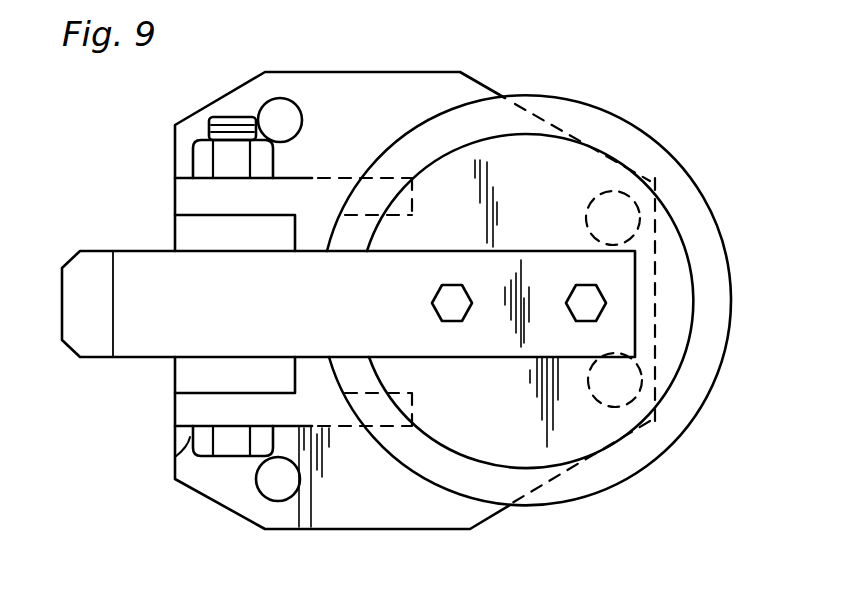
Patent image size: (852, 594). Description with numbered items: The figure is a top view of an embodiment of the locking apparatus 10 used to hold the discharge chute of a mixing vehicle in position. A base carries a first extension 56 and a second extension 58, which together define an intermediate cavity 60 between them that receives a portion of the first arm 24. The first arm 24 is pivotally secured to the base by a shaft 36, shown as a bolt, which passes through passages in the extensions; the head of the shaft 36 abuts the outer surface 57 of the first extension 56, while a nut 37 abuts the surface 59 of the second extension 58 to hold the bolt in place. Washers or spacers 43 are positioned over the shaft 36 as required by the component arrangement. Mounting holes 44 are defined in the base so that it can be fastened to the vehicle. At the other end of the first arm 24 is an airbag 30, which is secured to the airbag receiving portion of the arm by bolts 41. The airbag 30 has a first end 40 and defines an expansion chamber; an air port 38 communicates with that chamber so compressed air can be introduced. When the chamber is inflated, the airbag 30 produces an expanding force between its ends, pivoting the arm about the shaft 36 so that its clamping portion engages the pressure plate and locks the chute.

The locking apparatus 10 is at (483, 70).
The first arm 24 is at (130, 265).
The airbag 30 is at (733, 320).
The shaft 36 is at (222, 117).
The nut 37 is at (192, 164).
The air port 38 is at (203, 475).
The first end 40 is at (558, 172).
The bolts 41 is at (581, 321).
The spacers 43 is at (200, 233).
The mounting holes 44 is at (282, 115).
The first extension 56 is at (190, 199).
The outer surface 57 is at (315, 178).
The second extension 58 is at (193, 409).
The surface 59 is at (178, 447).
The intermediate cavity 60 is at (315, 373).